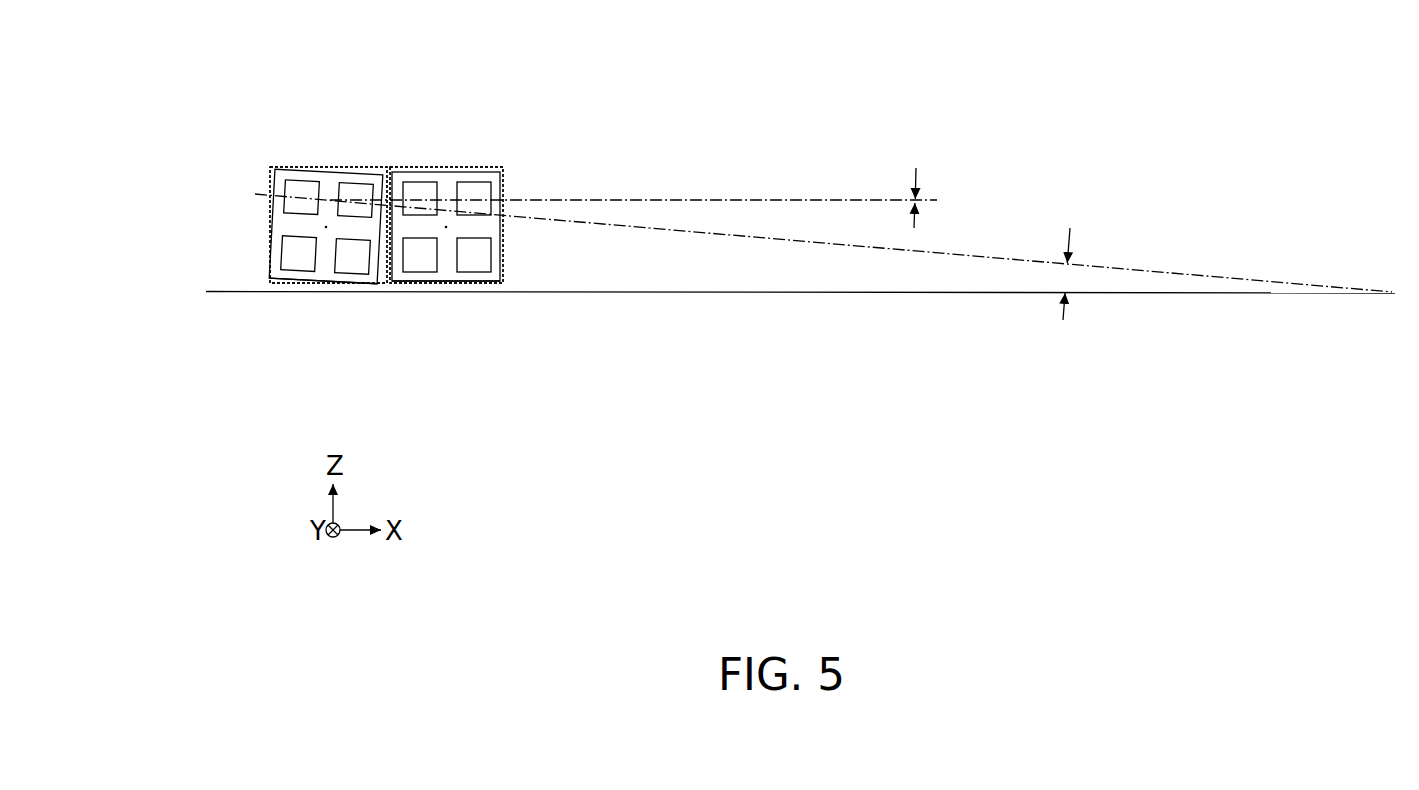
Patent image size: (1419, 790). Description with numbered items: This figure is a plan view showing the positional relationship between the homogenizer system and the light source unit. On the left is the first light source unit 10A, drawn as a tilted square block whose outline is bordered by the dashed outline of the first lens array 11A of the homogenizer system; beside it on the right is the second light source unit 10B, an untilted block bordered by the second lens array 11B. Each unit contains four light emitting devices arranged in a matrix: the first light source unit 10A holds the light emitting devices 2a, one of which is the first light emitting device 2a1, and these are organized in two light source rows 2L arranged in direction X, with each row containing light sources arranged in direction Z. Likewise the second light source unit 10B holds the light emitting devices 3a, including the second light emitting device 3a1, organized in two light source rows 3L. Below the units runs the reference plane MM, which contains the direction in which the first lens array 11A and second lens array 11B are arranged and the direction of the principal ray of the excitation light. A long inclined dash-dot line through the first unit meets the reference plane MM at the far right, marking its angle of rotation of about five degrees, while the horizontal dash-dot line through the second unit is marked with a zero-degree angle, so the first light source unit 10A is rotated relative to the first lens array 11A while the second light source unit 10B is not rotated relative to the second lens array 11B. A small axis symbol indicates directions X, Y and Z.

The first light source unit 10A is at (268, 183).
The second light source unit 10B is at (503, 187).
The first lens array 11A is at (333, 167).
The second lens array 11B is at (455, 167).
The light emitting device 2a is at (357, 190).
The first light emitting device 2a1 is at (298, 188).
The light emitting device 3a is at (417, 188).
The second light emitting device 3a1 is at (475, 188).
The light source rows 2L is at (290, 280).
The light source rows 3L is at (415, 282).
The reference plane MM is at (543, 290).